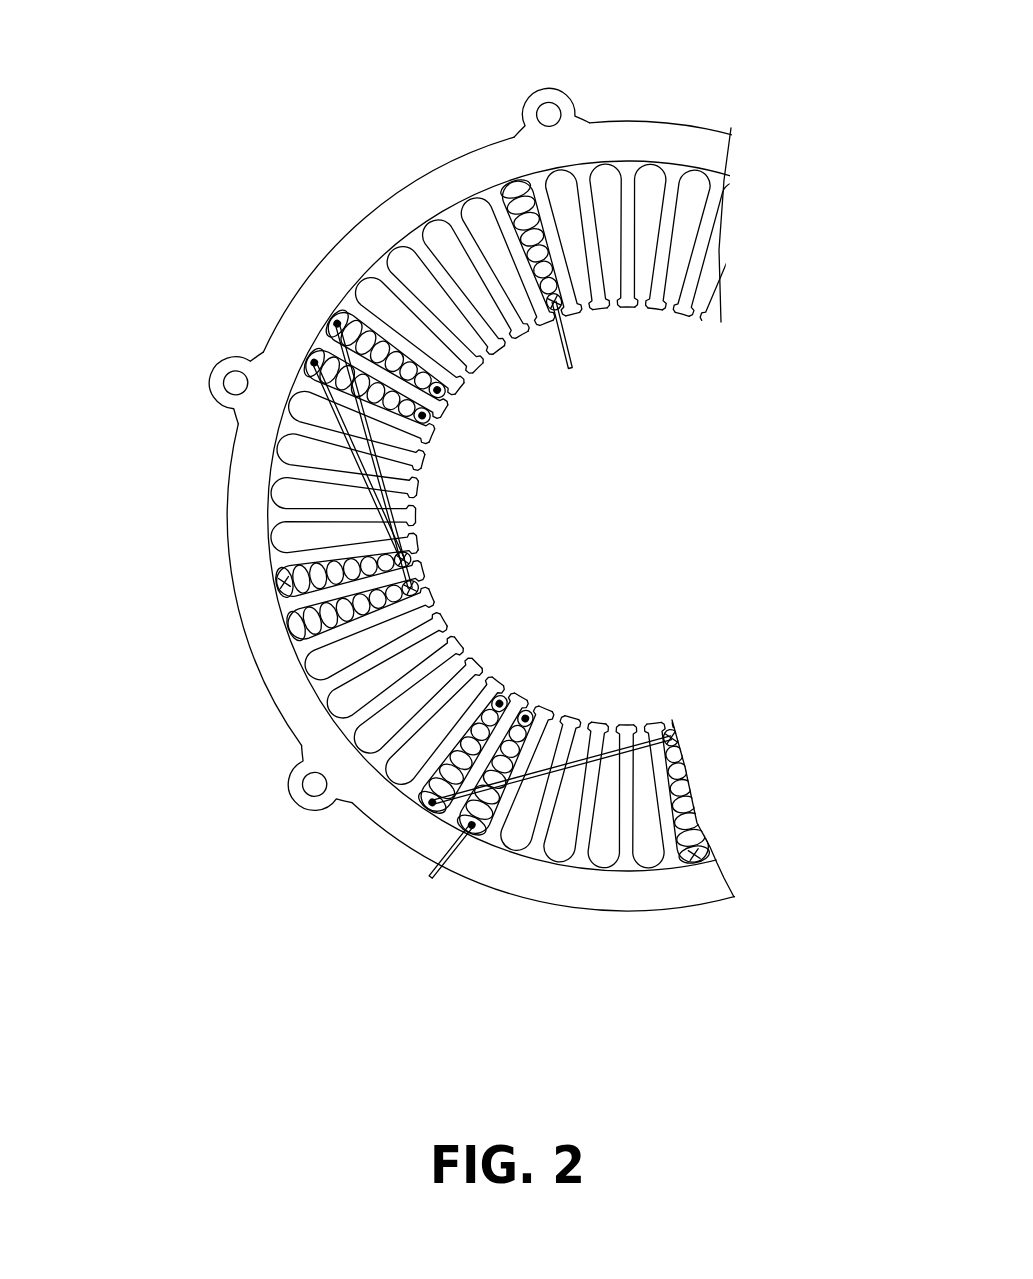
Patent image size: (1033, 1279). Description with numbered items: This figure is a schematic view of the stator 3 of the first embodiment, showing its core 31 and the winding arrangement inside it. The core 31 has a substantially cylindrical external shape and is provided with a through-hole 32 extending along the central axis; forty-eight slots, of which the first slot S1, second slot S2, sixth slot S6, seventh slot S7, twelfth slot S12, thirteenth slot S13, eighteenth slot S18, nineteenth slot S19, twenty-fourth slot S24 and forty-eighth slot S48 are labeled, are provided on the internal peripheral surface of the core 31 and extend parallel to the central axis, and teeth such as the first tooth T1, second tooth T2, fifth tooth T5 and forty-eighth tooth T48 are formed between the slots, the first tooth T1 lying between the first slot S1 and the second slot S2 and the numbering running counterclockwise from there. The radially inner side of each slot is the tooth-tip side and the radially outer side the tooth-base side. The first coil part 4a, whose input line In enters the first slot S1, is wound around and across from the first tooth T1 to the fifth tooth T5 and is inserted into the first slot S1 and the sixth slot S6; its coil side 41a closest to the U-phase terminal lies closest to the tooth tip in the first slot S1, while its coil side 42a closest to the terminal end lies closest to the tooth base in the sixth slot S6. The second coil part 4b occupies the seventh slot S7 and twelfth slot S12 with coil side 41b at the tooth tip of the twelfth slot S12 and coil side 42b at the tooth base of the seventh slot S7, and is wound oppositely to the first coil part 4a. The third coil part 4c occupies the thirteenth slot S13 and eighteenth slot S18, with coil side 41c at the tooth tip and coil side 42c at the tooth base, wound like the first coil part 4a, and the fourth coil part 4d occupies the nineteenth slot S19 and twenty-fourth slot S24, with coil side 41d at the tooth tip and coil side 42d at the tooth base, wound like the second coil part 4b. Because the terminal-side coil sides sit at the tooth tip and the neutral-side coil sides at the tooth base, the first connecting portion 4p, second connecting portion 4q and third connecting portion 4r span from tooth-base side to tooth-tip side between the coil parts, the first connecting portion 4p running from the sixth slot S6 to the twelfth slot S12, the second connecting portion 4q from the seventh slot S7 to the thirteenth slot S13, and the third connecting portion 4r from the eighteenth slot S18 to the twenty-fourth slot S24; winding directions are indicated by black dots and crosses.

The stator housing 3 is at (344, 191).
The core 31 is at (460, 177).
The through-hole 32 is at (642, 519).
The first slot S1 is at (500, 215).
The second slot S2 is at (473, 205).
The sixth slot S6 is at (330, 328).
The seventh slot S7 is at (305, 368).
The twelfth slot S12 is at (282, 580).
The thirteenth slot S13 is at (292, 624).
The eighteenth slot S18 is at (427, 810).
The nineteenth slot S19 is at (477, 837).
The twenty-fourth slot S24 is at (690, 860).
The forty-eighth slot S48 is at (563, 163).
The first tooth T1 is at (500, 217).
The second tooth T2 is at (455, 238).
The fifth tooth T5 is at (368, 314).
The forty-eighth tooth T48 is at (540, 190).
The first coil part 4a is at (559, 325).
The second coil part 4b is at (448, 421).
The third coil part 4c is at (508, 680).
The fourth coil part 4d is at (666, 715).
The first connecting portion 4p is at (292, 412).
The second connecting portion 4q is at (310, 464).
The third connecting portion 4r is at (553, 815).
The coil side 41a is at (562, 308).
The coil side 41b is at (420, 560).
The coil side 41c is at (420, 588).
The coil side 41d is at (667, 727).
The coil side 42a is at (340, 318).
The coil side 42b is at (318, 362).
The coil side 42c is at (427, 805).
The coil side 42d is at (478, 843).
The input line In is at (587, 364).